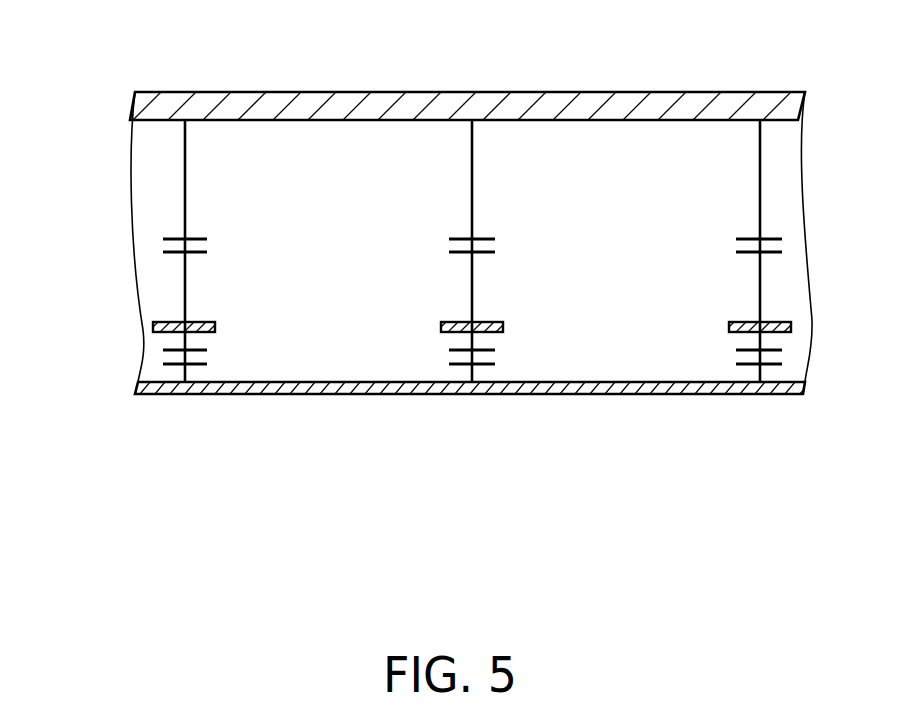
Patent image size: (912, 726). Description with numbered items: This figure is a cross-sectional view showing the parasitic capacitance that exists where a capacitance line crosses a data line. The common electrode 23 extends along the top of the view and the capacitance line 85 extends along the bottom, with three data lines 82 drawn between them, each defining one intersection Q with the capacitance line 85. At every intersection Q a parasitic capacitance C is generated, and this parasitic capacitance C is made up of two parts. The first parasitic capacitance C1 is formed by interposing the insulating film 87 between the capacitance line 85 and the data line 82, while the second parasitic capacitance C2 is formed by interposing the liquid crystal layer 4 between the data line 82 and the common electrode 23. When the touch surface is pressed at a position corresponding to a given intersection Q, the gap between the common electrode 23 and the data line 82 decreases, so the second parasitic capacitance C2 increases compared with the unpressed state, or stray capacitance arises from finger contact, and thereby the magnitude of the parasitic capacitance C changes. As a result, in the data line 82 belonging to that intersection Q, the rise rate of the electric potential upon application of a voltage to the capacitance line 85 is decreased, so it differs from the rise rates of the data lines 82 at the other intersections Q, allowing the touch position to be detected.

The common electrode 23 is at (306, 104).
The capacitance line 85 is at (637, 386).
The liquid crystal layer 4 is at (128, 120).
The insulating film 87 is at (138, 332).
The data line 82 is at (206, 322).
The second parasitic capacitance C2 is at (222, 246).
The first parasitic capacitance C1 is at (222, 356).
The parasitic capacitance C is at (297, 225).
The intersection Q is at (185, 418).